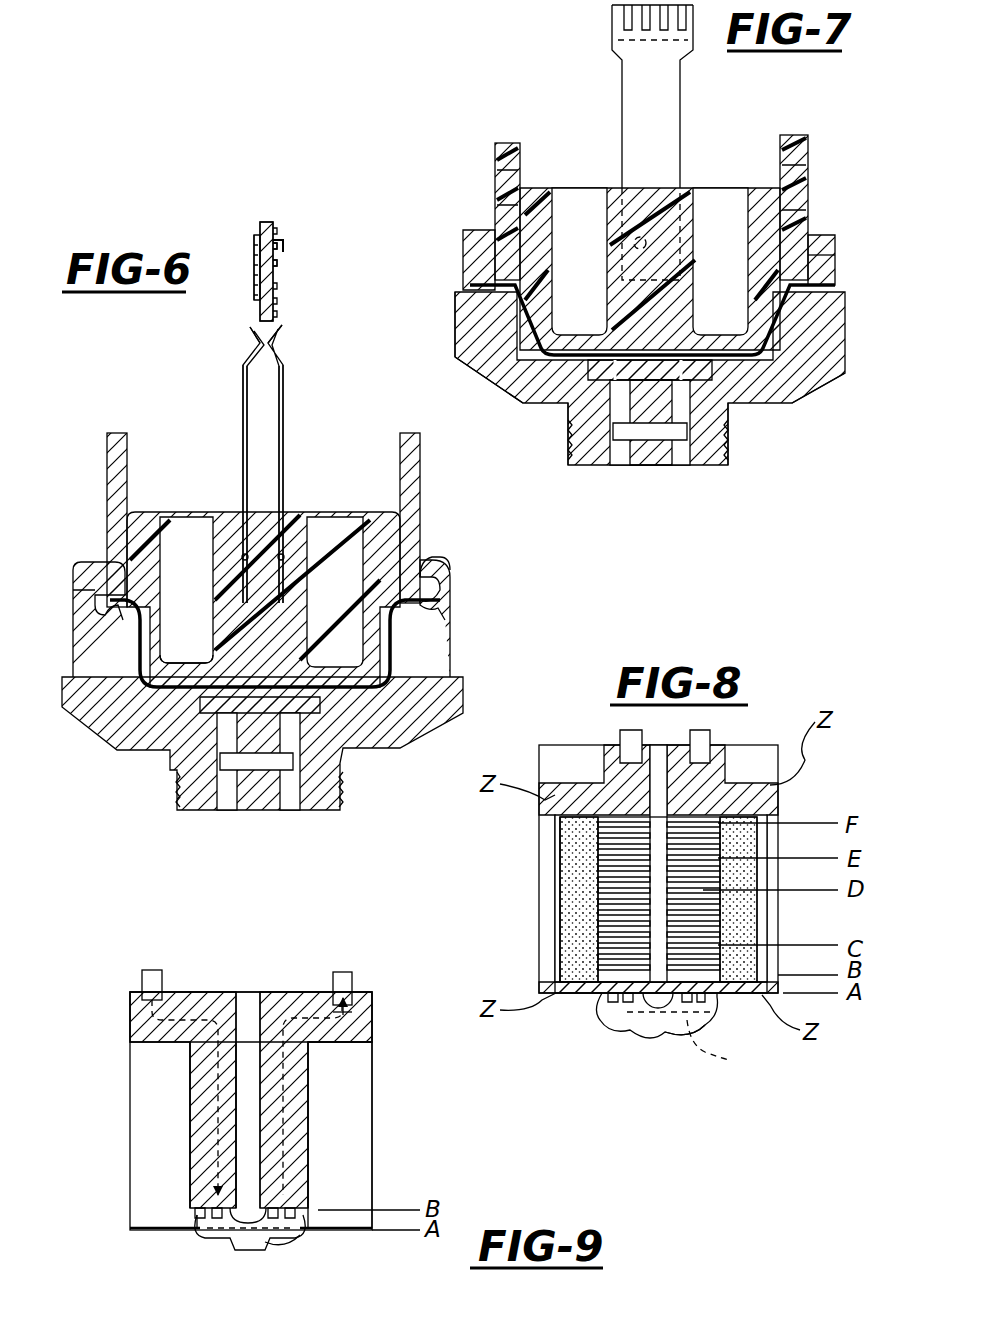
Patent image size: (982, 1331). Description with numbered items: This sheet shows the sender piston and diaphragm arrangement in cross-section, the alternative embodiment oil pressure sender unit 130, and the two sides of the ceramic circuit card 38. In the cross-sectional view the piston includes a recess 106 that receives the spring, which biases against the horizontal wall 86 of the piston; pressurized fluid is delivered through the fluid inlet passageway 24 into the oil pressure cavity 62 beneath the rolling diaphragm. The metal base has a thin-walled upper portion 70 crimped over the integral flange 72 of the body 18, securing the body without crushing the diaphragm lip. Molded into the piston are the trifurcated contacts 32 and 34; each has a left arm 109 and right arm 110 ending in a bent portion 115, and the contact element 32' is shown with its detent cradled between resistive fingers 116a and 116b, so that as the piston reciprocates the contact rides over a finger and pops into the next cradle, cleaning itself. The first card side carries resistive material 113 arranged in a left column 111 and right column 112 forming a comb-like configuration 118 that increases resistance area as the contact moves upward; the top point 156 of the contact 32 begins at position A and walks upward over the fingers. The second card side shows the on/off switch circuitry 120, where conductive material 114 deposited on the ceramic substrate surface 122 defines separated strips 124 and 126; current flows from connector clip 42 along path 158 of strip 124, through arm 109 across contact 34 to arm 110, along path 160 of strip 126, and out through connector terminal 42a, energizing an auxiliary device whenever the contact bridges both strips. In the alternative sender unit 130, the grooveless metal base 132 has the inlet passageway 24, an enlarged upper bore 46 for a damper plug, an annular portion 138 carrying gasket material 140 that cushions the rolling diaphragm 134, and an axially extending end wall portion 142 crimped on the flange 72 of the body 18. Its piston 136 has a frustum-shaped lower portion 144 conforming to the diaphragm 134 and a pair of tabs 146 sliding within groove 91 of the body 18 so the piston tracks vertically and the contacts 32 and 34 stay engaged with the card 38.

In FIG. 7, the body 18 is at (800, 155).
In FIG. 7, the fluid inlet passageway 24 is at (625, 455).
In FIG. 6, the contact 32 is at (325, 484).
In FIG. 7, the contact 32 is at (652, 142).
In FIG. 8, the contact 32 is at (656, 1049).
In FIG. 6, the contact element 32' is at (322, 240).
In FIG. 6, the contact 34 is at (243, 437).
In FIG. 9, the contact 34 is at (233, 1237).
In FIG. 6, the circuit card 38 is at (272, 222).
In FIG. 8, the circuit card 38 is at (766, 743).
In FIG. 9, the circuit card 38 is at (125, 1218).
In FIG. 9, the connector clip 42 is at (152, 970).
In FIG. 9, the connector terminal 42a is at (352, 978).
In FIG. 7, the enlarged upper bore 46 is at (600, 385).
In FIG. 6, the oil pressure cavity 62 is at (385, 662).
In FIG. 6, the upper portion 70 is at (420, 580).
In FIG. 7, the flange 72 is at (825, 258).
In FIG. 6, the horizontal wall 86 is at (185, 662).
In FIG. 7, the groove 91 is at (495, 205).
In FIG. 6, the recess 106 is at (205, 556).
In FIG. 7, the recess 106 is at (597, 247).
In FIG. 8, the left arm 109 is at (625, 1015).
In FIG. 9, the left arm 109 is at (207, 1235).
In FIG. 8, the right arm 110 is at (700, 1015).
In FIG. 9, the right arm 110 is at (270, 1237).
In FIG. 8, the left column 111 is at (592, 862).
In FIG. 8, the right column 112 is at (740, 922).
In FIG. 6, the resistive material 113 is at (273, 238).
In FIG. 8, the resistive material 113 is at (572, 832).
In FIG. 6, the conductive material 114 is at (257, 273).
In FIG. 9, the conductive material 114 is at (283, 1125).
In FIG. 6, the bent portion 115 is at (256, 343).
In FIG. 8, the bent portion 115 is at (721, 1056).
In FIG. 6, the resistive finger 116a is at (277, 255).
In FIG. 8, the resistive finger 116a is at (713, 888).
In FIG. 6, the resistive finger 116b is at (277, 267).
In FIG. 8, the resistive finger 116b is at (708, 915).
In FIG. 8, the comb-like configuration 118 is at (580, 912).
In FIG. 9, the on/off switch circuitry 120 is at (247, 991).
In FIG. 9, the ceramic substrate surface 122 is at (353, 1053).
In FIG. 9, the strip 124 is at (197, 1175).
In FIG. 9, the strip 126 is at (300, 1070).
In FIG. 7, the oil pressure sender unit 130 is at (567, 145).
In FIG. 7, the base 132 is at (605, 377).
In FIG. 7, the rolling diaphragm 134 is at (770, 360).
In FIG. 7, the piston 136 is at (658, 318).
In FIG. 7, the annular portion 138 is at (482, 292).
In FIG. 7, the gasket material 140 is at (517, 390).
In FIG. 7, the end wall portion 142 is at (830, 248).
In FIG. 7, the frustum-shaped lower portion 144 is at (735, 295).
In FIG. 7, the tabs 146 is at (495, 195).
In FIG. 6, the top point 156 is at (282, 325).
In FIG. 8, the top point 156 is at (600, 997).
In FIG. 9, the top point 156 is at (300, 1235).
In FIG. 9, the path 158 is at (218, 1057).
In FIG. 9, the path 160 is at (345, 1012).